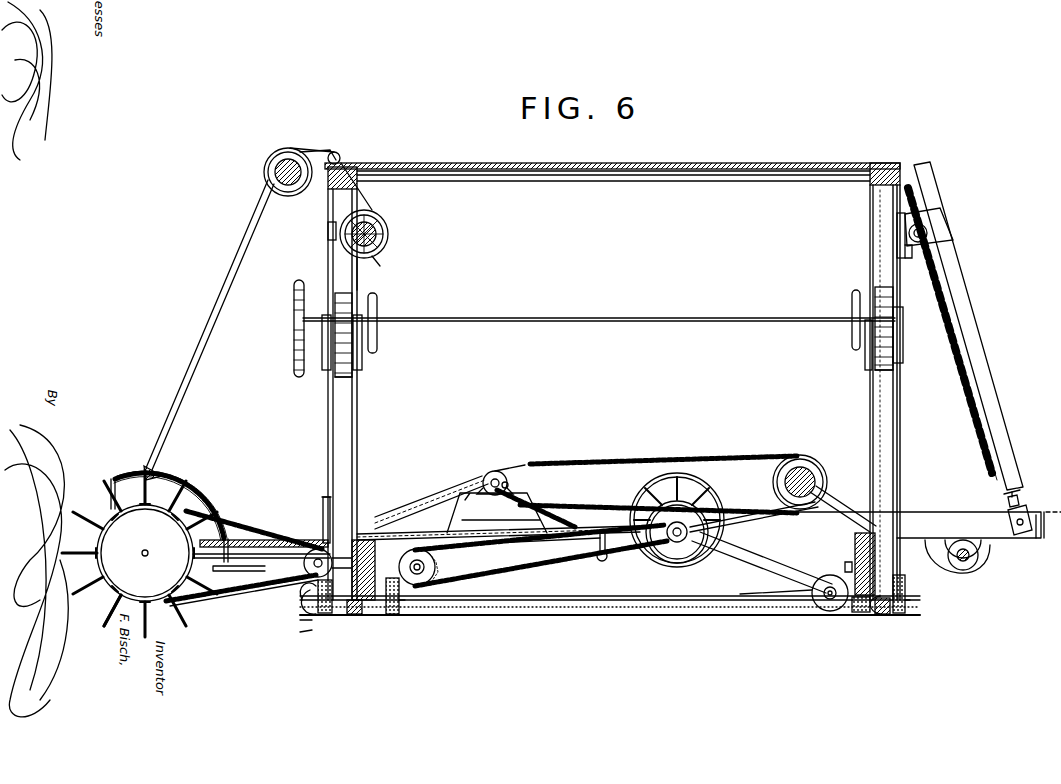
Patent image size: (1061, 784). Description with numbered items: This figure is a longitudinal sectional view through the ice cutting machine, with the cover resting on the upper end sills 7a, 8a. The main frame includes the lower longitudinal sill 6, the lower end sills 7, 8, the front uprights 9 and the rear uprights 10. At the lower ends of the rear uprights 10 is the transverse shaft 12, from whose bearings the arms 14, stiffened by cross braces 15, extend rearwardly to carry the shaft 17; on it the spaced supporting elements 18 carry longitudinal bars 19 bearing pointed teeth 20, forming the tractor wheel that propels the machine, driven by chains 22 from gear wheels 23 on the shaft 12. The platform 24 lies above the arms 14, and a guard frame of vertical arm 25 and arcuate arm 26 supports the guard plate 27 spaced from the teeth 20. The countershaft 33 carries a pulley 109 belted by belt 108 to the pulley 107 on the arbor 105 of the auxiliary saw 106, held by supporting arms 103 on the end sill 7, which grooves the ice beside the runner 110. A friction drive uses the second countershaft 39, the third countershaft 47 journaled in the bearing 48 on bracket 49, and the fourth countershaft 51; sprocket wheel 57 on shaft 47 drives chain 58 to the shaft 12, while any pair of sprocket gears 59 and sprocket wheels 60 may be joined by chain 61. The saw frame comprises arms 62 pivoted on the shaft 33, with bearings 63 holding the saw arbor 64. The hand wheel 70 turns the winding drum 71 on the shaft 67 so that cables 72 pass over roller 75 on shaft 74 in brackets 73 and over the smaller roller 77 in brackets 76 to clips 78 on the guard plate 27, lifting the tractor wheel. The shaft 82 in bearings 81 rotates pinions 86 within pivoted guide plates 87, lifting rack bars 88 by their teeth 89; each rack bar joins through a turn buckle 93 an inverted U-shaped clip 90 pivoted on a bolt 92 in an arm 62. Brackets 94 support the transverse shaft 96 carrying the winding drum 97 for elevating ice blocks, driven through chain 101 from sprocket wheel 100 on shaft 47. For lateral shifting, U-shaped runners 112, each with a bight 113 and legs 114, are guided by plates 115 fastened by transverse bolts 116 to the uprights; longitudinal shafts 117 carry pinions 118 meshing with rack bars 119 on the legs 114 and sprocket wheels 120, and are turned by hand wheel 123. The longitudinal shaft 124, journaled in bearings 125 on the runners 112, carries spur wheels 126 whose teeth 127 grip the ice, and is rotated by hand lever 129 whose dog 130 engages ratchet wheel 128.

The lower longitudinal sill 6 is at (418, 533).
The lower end sill 7 is at (908, 514).
The upper end sill 7a is at (888, 160).
The lower end sill 8 is at (358, 502).
The upper end sill 8a is at (328, 230).
The front uprights 9 is at (853, 192).
The rear uprights 10 is at (328, 437).
The transverse shaft 12 is at (323, 520).
The arms 14 is at (212, 594).
The cross braces 15 is at (232, 569).
The shaft 17 is at (145, 549).
The supporting elements 18 is at (95, 568).
The longitudinal bars 19 is at (141, 606).
The pointed teeth 20 is at (112, 598).
The chains 22 is at (240, 592).
The gear wheels 23 is at (300, 602).
The platform 24 is at (262, 530).
The vertical arm 25 is at (111, 492).
The arcuate arm 26 is at (218, 512).
The guard plate 27 is at (200, 492).
The countershaft 33 is at (700, 550).
The second countershaft 39 is at (620, 556).
The third countershaft 47 is at (500, 467).
The bearing 48 is at (508, 478).
The bracket 49 is at (485, 520).
The fourth countershaft 51 is at (445, 594).
The sprocket wheel 57 is at (514, 466).
The chain 58 is at (447, 489).
The sprocket gears 59 is at (437, 567).
The sprocket wheels 60 is at (665, 553).
The chain 61 is at (560, 542).
The arms 62 is at (1030, 542).
The bearing 63 is at (985, 562).
The saw arbor 64 is at (968, 570).
The transverse shaft 67 is at (352, 240).
The hand wheel 70 is at (388, 229).
The winding drum 71 is at (369, 256).
The cables 72 is at (216, 298).
The brackets 73 is at (328, 190).
The shaft 74 is at (264, 173).
The roller 75 is at (285, 186).
The brackets 76 is at (332, 150).
The smaller roller 77 is at (339, 154).
The clips 78 is at (144, 468).
The bearings 81 is at (897, 234).
The shaft 82 is at (926, 233).
The pinion 86 is at (908, 258).
The guide plates 87 is at (958, 262).
The rack bar 88 is at (953, 334).
The teeth 89 is at (980, 431).
The inverted U-shaped clip 90 is at (1026, 508).
The bolt 92 is at (1021, 540).
The turn buckle 93 is at (1018, 494).
The brackets 94 is at (842, 512).
The transverse shaft 96 is at (818, 470).
The winding drum 97 is at (808, 456).
The sprocket wheel 100 is at (487, 473).
The chain 101 is at (714, 462).
The supporting arms 103 is at (837, 560).
The arbor 105 is at (830, 612).
The auxiliary saw 106 is at (858, 614).
The pulley 107 is at (806, 600).
The belt 108 is at (724, 617).
The pulley 109 is at (722, 498).
The runner 110 is at (588, 616).
The vertically movable runners 112 is at (340, 615).
The bight 113 is at (312, 617).
The legs 114 is at (357, 438).
The plates 115 is at (353, 352).
The transverse bolts 116 is at (322, 362).
The longitudinal shafts 117 is at (670, 316).
The pinion 118 is at (335, 307).
The rack bar 119 is at (340, 380).
The sprocket wheel 120 is at (378, 306).
The hand wheel 123 is at (294, 316).
The longitudinal shaft 124 is at (692, 617).
The bearings 125 is at (360, 614).
The spur wheels 126 is at (392, 617).
The teeth 127 is at (400, 618).
The ratchet wheel 128 is at (300, 636).
The hand lever 129 is at (322, 496).
The dog 130 is at (300, 622).